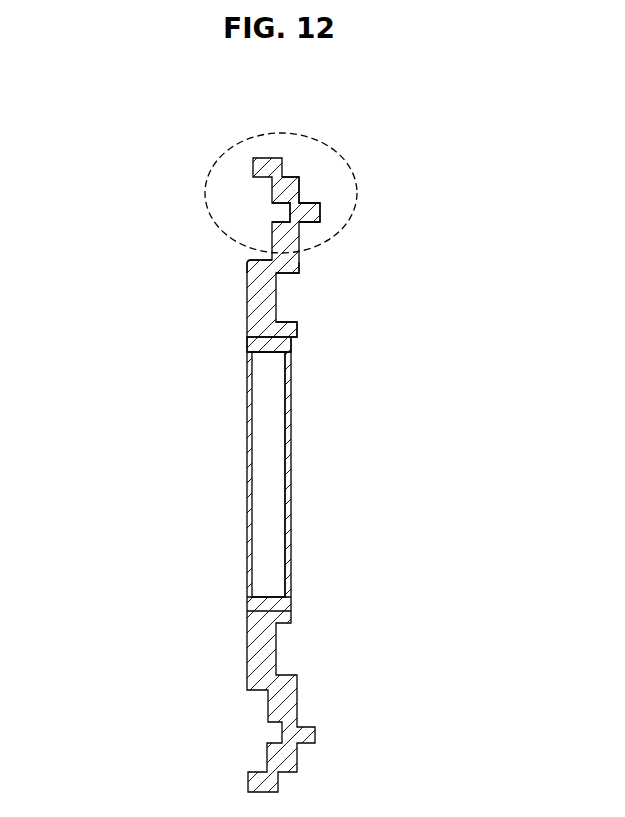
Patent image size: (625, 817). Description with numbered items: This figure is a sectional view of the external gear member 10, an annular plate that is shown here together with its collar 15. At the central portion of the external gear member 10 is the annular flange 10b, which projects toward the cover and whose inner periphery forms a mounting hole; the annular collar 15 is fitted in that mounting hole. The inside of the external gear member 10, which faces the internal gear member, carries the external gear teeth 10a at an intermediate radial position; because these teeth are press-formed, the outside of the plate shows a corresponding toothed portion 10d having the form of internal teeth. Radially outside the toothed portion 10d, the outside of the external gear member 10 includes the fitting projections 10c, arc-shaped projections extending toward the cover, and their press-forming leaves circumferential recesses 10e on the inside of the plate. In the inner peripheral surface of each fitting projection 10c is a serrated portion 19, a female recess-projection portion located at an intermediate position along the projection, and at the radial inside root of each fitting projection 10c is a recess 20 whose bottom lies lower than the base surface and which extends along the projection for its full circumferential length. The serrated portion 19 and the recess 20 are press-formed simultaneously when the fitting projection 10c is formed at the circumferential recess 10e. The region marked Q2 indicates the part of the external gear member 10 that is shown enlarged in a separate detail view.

The external gear member 10 is at (247, 305).
The external gear teeth 10a is at (250, 262).
The annular flange 10b is at (280, 311).
The fitting projections 10c is at (322, 203).
The toothed portion 10d is at (299, 274).
The circumferential recesses 10e is at (289, 213).
The collar 15 is at (290, 362).
The serrated portion 19 is at (311, 228).
The recess 20 is at (300, 236).
The part of the external gear member Q2 is at (340, 148).